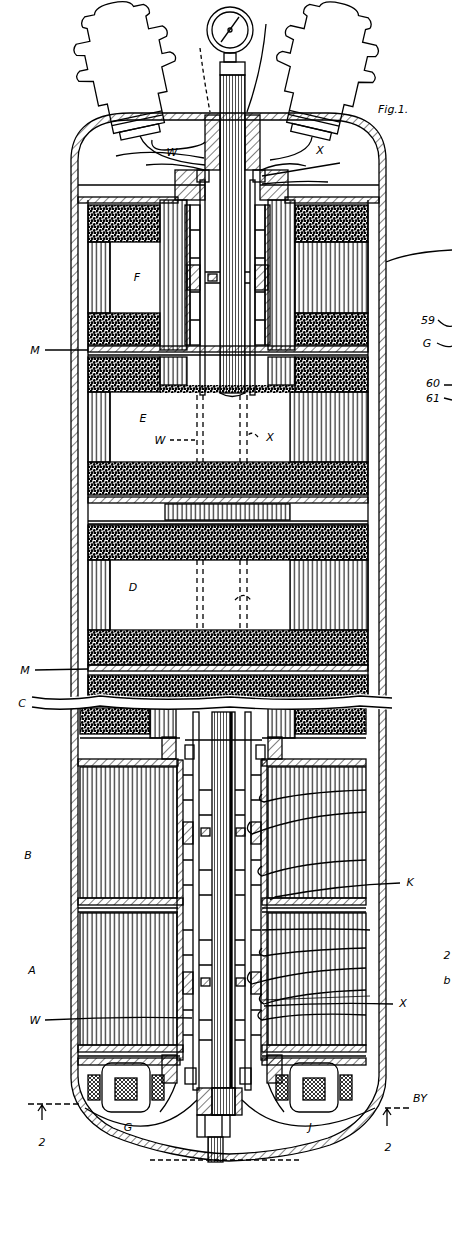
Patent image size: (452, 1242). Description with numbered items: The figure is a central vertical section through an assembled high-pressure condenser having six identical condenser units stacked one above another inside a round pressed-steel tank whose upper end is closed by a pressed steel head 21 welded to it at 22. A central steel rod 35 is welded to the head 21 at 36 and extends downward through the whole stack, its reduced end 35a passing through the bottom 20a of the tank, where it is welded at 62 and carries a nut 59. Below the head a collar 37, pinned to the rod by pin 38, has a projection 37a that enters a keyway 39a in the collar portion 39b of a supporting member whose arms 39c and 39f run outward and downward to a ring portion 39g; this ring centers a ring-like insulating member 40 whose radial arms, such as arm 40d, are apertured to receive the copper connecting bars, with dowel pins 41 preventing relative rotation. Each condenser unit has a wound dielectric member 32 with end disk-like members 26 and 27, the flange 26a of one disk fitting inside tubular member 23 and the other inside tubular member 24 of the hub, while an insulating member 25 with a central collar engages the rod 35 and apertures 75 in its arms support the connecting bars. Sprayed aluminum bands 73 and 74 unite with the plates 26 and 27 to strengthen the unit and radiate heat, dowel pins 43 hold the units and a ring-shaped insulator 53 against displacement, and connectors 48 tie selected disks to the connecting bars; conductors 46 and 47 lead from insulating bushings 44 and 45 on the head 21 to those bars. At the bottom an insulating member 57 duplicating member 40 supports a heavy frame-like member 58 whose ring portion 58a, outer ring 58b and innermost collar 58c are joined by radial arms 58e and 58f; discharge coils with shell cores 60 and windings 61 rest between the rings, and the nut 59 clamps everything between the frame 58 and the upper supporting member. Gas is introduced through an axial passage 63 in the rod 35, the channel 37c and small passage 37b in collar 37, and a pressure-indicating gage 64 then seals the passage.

The bottom of the container 20a is at (333, 1143).
The pressed steel head 21 is at (346, 138).
The weld 22 is at (386, 146).
The tubular member 23 is at (366, 790).
The tubular member 24 is at (366, 860).
The insulating member 25 is at (366, 812).
The disk-like member 26 is at (380, 202).
The flange 26a is at (370, 930).
The disk-like member 27 is at (50, 1048).
The dielectric member 32 is at (95, 268).
The rod 35 is at (258, 610).
The reduced portion of the rod 35a is at (200, 1157).
The weld 36 is at (245, 100).
The collar 37 is at (208, 112).
The downwardly directed projection 37a is at (259, 136).
The small passage 37b is at (207, 122).
The peripherally extending channel 37c is at (252, 118).
The pin 38 is at (150, 140).
The keyway 39a is at (258, 130).
The collar portion 39b is at (178, 143).
The arm 39c is at (163, 165).
The arm 39f is at (295, 154).
The ring portion 39g is at (306, 181).
The ring-like insulating member 40 is at (300, 200).
The arm 40d is at (246, 1112).
The dowel pin 41 is at (197, 176).
The dowel pin 43 is at (176, 192).
The insulating bushing 44 is at (98, 72).
The insulating bushing 45 is at (372, 44).
The conductor 46 is at (151, 157).
The conductor 47 is at (310, 165).
The connector 48 is at (178, 766).
The ring-shaped insulator 53 is at (292, 512).
The insulating member 57 is at (366, 1062).
The frame-like member 58 is at (366, 1076).
The ring portion 58a is at (118, 1140).
The outer ring-like member 58b is at (102, 1086).
The innermost ring or collar portion 58c is at (226, 1138).
The radial arm 58e is at (166, 1112).
The radial arm 58f is at (298, 1150).
The nut 59 is at (197, 1130).
The core 60 is at (82, 1108).
The winding 61 is at (116, 1112).
The weld 62 is at (230, 1160).
The passage 63 is at (196, 74).
The pressure-indicating gage 64 is at (212, 22).
The band of sprayed metal 73 is at (370, 222).
The band of sprayed metal 74 is at (370, 331).
The aperture 75 is at (262, 835).